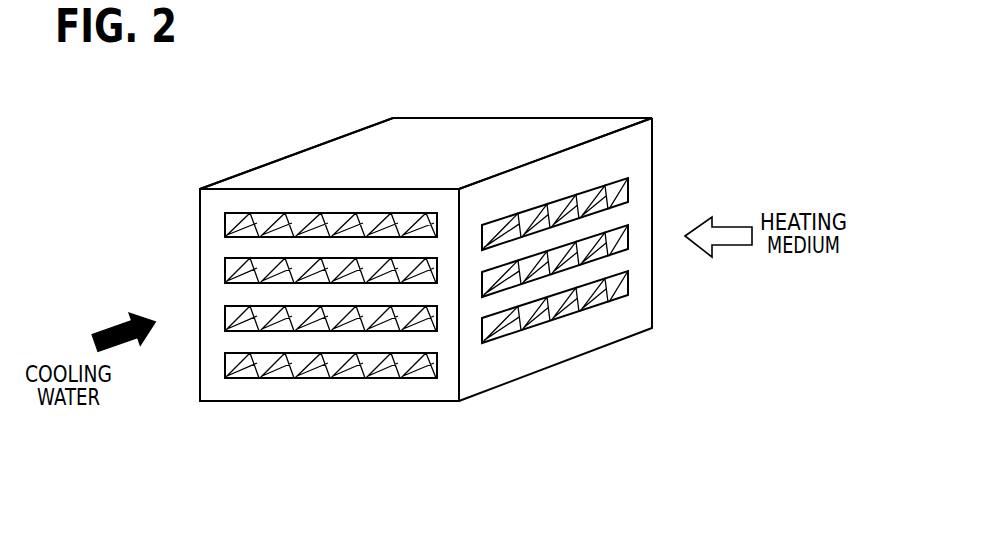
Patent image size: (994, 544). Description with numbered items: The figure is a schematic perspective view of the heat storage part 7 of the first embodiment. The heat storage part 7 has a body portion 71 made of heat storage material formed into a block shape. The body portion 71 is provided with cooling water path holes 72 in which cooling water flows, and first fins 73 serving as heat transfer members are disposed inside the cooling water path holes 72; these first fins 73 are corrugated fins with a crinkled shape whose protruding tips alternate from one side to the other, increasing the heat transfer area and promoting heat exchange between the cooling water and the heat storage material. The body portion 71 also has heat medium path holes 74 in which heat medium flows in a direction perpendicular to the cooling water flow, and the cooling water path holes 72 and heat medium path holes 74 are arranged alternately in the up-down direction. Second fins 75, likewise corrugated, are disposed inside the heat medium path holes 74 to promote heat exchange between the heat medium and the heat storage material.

The heat storage part 7 is at (552, 116).
The body portion 71 is at (412, 140).
The cooling water path holes 72 is at (360, 378).
The first fins 73 is at (257, 217).
The heat medium path holes 74 is at (555, 322).
The second fins 75 is at (622, 172).